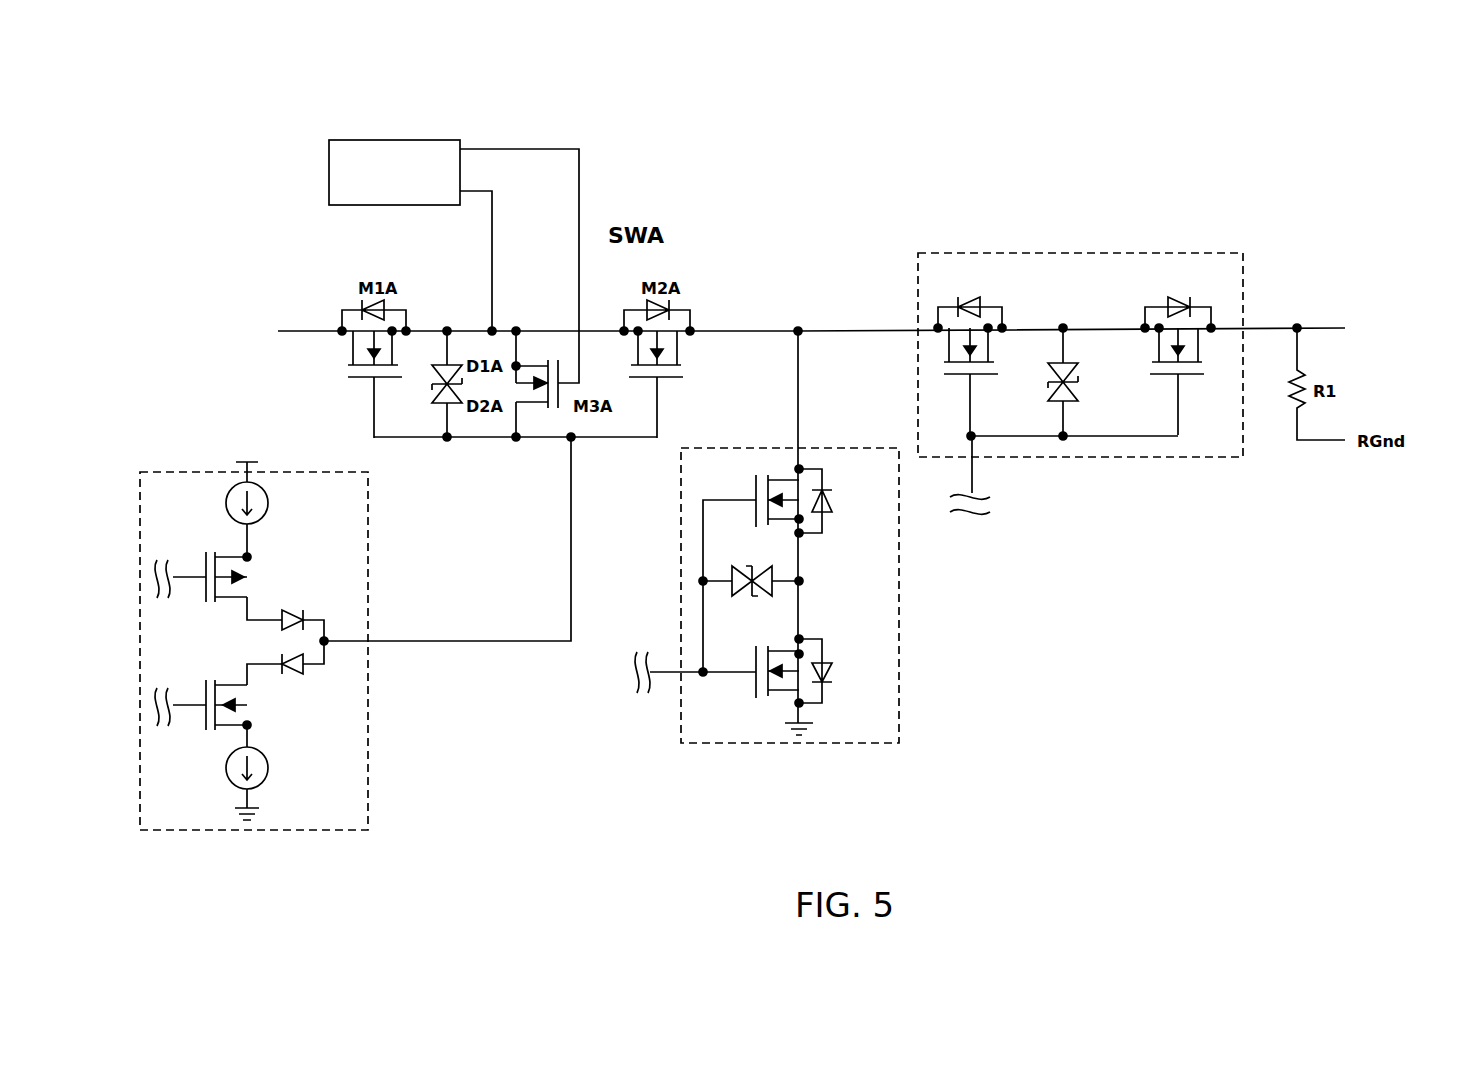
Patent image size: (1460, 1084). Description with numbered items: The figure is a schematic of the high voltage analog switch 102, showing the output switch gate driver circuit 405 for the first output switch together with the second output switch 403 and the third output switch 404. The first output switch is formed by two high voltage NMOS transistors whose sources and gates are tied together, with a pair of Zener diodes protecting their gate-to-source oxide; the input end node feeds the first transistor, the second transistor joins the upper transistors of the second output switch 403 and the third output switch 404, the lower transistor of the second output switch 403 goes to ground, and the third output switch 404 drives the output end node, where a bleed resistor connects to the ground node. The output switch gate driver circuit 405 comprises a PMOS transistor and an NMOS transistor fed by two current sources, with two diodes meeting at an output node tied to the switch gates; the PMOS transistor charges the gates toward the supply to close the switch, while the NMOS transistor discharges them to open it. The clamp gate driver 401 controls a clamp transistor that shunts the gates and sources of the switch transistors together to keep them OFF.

The high voltage analog switch 102 is at (1227, 173).
The clamp gate driver 401 is at (364, 140).
The output switch SWB 403 is at (680, 580).
The output switch SWC 404 is at (1053, 253).
The output switch gate driver circuit 405 is at (192, 472).